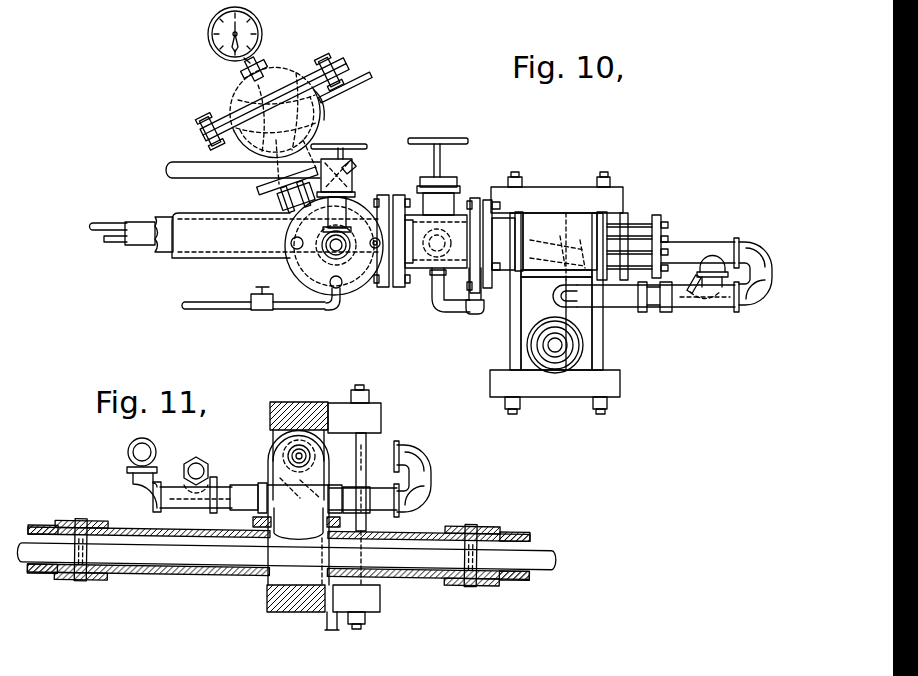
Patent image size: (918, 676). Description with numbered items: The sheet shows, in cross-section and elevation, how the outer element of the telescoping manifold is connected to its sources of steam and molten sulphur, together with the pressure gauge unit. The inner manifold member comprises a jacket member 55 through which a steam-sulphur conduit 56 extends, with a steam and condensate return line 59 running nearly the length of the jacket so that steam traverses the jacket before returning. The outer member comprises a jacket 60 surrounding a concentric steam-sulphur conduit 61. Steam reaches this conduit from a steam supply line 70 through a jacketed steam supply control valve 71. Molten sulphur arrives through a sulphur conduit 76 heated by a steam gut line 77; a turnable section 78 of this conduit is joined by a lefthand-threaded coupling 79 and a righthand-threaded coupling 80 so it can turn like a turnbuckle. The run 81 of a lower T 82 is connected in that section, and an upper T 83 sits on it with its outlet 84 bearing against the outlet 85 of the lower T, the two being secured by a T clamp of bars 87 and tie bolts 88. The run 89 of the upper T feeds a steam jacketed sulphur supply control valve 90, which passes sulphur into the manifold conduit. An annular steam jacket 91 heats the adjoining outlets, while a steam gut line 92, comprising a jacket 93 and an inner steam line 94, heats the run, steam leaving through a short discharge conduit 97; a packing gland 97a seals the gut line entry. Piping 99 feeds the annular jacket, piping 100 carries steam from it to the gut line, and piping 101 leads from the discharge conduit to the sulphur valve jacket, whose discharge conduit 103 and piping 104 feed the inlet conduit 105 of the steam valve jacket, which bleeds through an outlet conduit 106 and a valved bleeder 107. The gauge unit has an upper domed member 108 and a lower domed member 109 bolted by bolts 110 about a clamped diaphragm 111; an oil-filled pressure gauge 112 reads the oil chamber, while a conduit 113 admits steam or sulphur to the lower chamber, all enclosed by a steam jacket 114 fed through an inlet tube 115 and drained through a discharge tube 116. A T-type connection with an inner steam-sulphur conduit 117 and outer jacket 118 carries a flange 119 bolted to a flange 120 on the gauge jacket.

In FIG. 10, the jacket member 55 is at (142, 246).
In FIG. 10, the steam-sulphur conduit 56 is at (94, 233).
In FIG. 10, the steam and condensate return line 59 is at (112, 244).
In FIG. 10, the jacket 60 is at (188, 259).
In FIG. 10, the steam-sulphur conduit 61 is at (163, 253).
In FIG. 10, the steam supply line 70 is at (178, 167).
In FIG. 10, the steam supply control valve 71 is at (355, 283).
In FIG. 10, the sulphur conduit 76 is at (570, 348).
In FIG. 11, the sulphur conduit 76 is at (42, 575).
In FIG. 10, the steam gut line 77 is at (563, 353).
In FIG. 11, the steam gut line 77 is at (170, 564).
In FIG. 11, the turnable section 78 is at (210, 573).
In FIG. 10, the coupling 79 is at (584, 340).
In FIG. 11, the coupling 79 is at (475, 526).
In FIG. 11, the coupling 80 is at (82, 518).
In FIG. 11, the run 81 is at (333, 614).
In FIG. 11, the lower T 82 is at (268, 604).
In FIG. 11, the upper T 83 is at (270, 464).
In FIG. 10, the outlet 84 is at (541, 266).
In FIG. 11, the outlet 84 is at (272, 480).
In FIG. 10, the outlet 85 is at (533, 279).
In FIG. 11, the outlet 85 is at (310, 520).
In FIG. 10, the bars 87 is at (578, 188).
In FIG. 11, the bars 87 is at (320, 402).
In FIG. 10, the tie bolts 88 is at (509, 360).
In FIG. 11, the tie bolts 88 is at (368, 440).
In FIG. 10, the run 89 is at (571, 238).
In FIG. 10, the sulphur supply control valve 90 is at (414, 272).
In FIG. 10, the annular steam jacket 91 is at (600, 309).
In FIG. 11, the annular steam jacket 91 is at (254, 520).
In FIG. 10, the steam gut line 92 is at (720, 241).
In FIG. 11, the jacket 93 is at (290, 450).
In FIG. 11, the steam line 94 is at (274, 431).
In FIG. 10, the discharge conduit 97 is at (706, 262).
In FIG. 10, the packing gland 97a is at (638, 240).
In FIG. 11, the piping 99 is at (170, 489).
In FIG. 10, the piping 100 is at (760, 272).
In FIG. 11, the piping 100 is at (424, 478).
In FIG. 10, the piping 101 is at (666, 284).
In FIG. 11, the piping 101 is at (220, 477).
In FIG. 10, the discharge conduit 103 is at (433, 300).
In FIG. 10, the piping 104 is at (457, 272).
In FIG. 10, the inlet conduit 105 is at (388, 281).
In FIG. 10, the outlet conduit 106 is at (327, 283).
In FIG. 10, the valved bleeder 107 is at (292, 311).
In FIG. 10, the upper domed member 108 is at (294, 84).
In FIG. 10, the lower domed member 109 is at (239, 104).
In FIG. 10, the bolts 110 is at (338, 60).
In FIG. 10, the diaphragm 111 is at (283, 85).
In FIG. 10, the pressure gauge 112 is at (210, 40).
In FIG. 10, the conduit 113 is at (327, 107).
In FIG. 10, the steam jacket 114 is at (336, 140).
In FIG. 10, the inlet tube 115 is at (393, 67).
In FIG. 10, the discharge tube 116 is at (257, 190).
In FIG. 10, the inner steam-sulphur conduit 117 is at (280, 203).
In FIG. 10, the outer jacket 118 is at (358, 190).
In FIG. 10, the flange 119 is at (352, 169).
In FIG. 10, the flange 120 is at (353, 161).